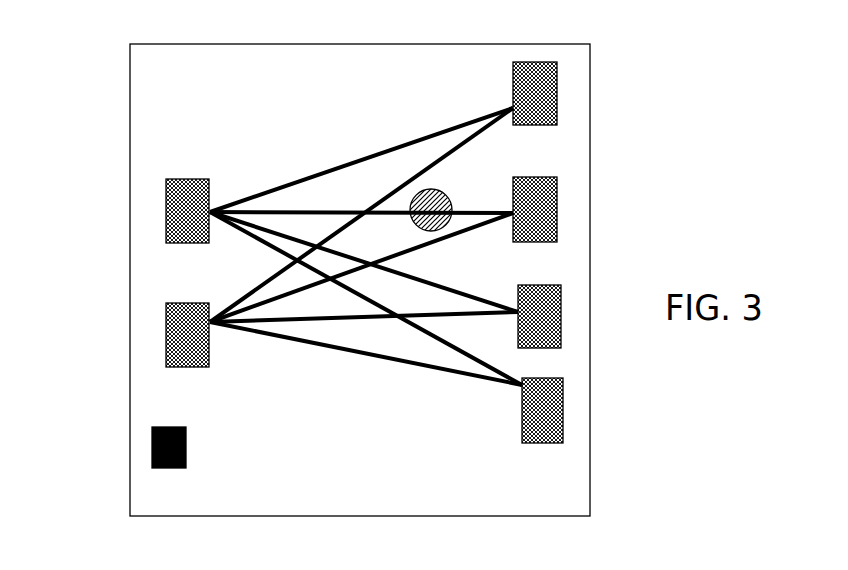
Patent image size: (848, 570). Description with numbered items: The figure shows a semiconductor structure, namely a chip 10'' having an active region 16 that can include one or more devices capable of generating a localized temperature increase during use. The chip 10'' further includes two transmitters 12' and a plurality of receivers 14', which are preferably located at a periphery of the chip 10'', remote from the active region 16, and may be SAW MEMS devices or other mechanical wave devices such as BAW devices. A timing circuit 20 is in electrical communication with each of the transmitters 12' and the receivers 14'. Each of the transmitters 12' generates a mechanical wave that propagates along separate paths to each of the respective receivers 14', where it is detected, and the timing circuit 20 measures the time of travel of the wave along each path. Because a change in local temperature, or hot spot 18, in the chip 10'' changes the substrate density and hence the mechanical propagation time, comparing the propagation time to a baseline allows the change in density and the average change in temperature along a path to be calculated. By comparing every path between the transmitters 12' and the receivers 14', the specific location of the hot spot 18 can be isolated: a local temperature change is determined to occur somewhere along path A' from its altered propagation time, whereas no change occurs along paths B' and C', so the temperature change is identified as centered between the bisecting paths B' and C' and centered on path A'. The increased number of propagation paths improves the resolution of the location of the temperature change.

The chip 10'' is at (320, 269).
The transmitters 12' is at (147, 263).
The receivers 14' is at (575, 252).
The active region 16 is at (366, 281).
The hot spot 18 is at (424, 204).
The timing circuit 20 is at (152, 458).
The path A' is at (361, 180).
The path B' is at (361, 203).
The path C' is at (361, 267).